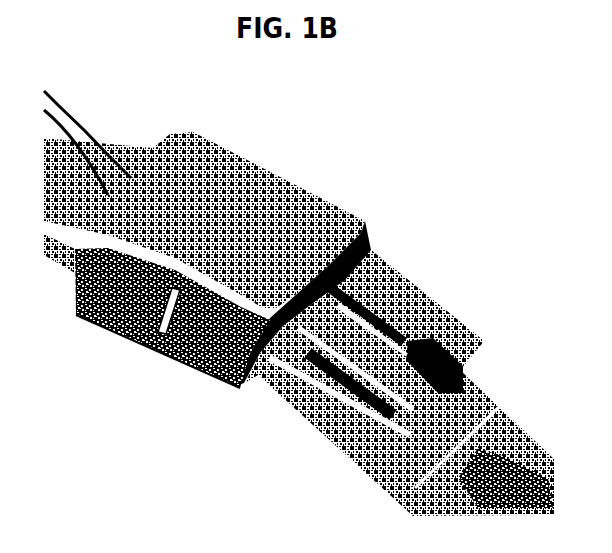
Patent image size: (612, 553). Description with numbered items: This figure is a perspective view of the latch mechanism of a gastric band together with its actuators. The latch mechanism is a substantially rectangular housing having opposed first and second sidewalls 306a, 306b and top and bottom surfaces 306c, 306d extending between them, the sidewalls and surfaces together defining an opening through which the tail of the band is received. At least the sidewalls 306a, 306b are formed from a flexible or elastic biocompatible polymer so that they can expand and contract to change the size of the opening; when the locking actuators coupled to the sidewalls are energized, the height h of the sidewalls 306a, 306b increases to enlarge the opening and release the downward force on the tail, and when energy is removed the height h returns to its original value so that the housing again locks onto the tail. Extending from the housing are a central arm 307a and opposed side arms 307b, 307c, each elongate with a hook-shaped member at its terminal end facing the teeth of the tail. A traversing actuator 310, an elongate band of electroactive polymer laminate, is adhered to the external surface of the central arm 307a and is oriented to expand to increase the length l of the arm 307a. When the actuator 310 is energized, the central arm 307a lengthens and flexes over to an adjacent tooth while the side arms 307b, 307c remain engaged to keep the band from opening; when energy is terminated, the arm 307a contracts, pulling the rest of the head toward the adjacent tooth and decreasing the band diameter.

The first sidewall 306a is at (86, 321).
The second sidewall 306b is at (378, 218).
The top surface 306c is at (270, 176).
The bottom surface 306d is at (168, 370).
The central arm 307a is at (388, 358).
The side arm 307b is at (383, 267).
The side arm 307c is at (332, 338).
The traversing actuator 310 is at (437, 342).
The height of the sidewalls h is at (150, 300).
The length of the arm l is at (393, 305).